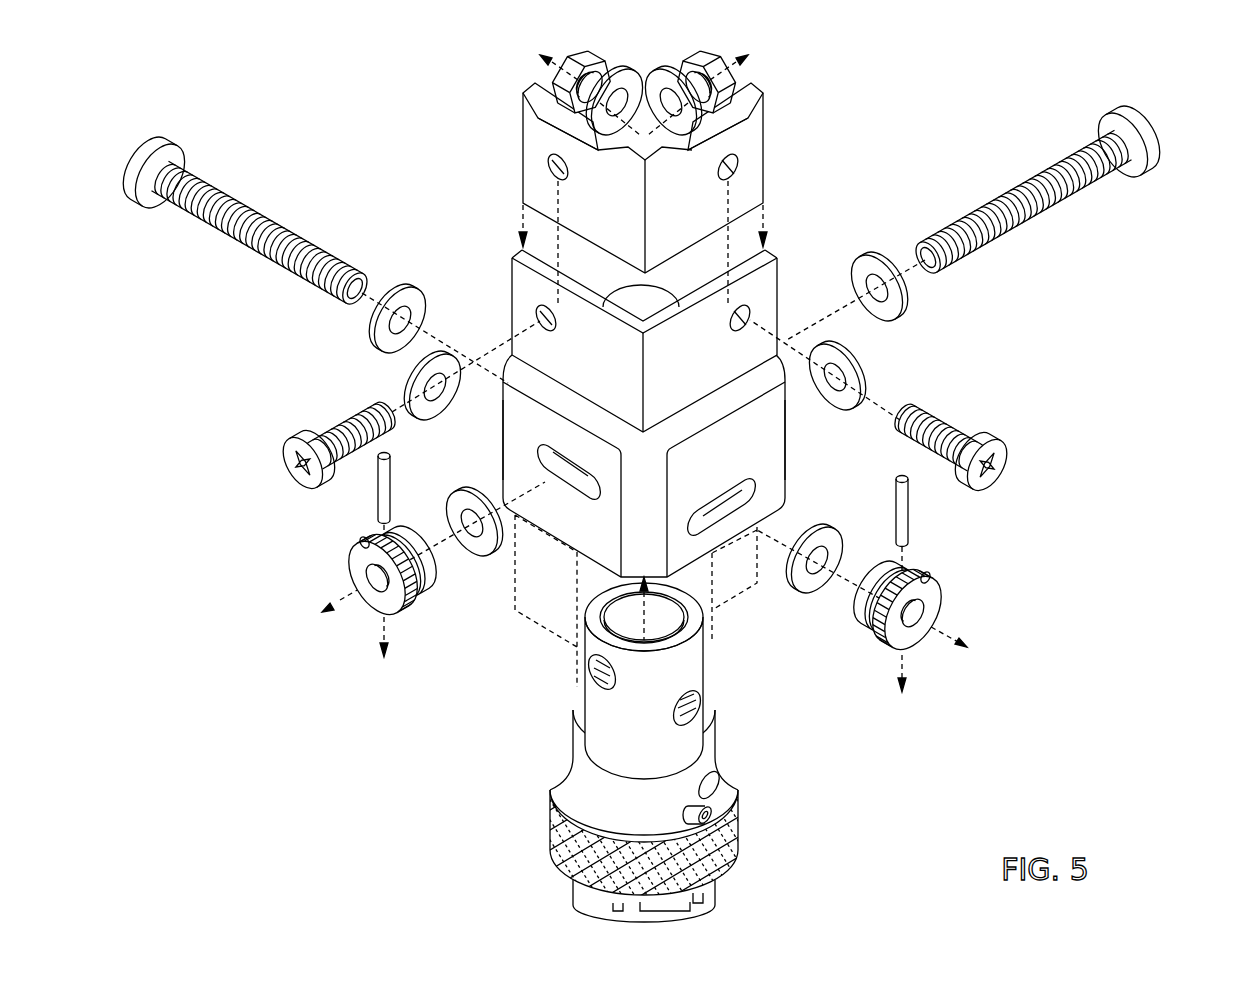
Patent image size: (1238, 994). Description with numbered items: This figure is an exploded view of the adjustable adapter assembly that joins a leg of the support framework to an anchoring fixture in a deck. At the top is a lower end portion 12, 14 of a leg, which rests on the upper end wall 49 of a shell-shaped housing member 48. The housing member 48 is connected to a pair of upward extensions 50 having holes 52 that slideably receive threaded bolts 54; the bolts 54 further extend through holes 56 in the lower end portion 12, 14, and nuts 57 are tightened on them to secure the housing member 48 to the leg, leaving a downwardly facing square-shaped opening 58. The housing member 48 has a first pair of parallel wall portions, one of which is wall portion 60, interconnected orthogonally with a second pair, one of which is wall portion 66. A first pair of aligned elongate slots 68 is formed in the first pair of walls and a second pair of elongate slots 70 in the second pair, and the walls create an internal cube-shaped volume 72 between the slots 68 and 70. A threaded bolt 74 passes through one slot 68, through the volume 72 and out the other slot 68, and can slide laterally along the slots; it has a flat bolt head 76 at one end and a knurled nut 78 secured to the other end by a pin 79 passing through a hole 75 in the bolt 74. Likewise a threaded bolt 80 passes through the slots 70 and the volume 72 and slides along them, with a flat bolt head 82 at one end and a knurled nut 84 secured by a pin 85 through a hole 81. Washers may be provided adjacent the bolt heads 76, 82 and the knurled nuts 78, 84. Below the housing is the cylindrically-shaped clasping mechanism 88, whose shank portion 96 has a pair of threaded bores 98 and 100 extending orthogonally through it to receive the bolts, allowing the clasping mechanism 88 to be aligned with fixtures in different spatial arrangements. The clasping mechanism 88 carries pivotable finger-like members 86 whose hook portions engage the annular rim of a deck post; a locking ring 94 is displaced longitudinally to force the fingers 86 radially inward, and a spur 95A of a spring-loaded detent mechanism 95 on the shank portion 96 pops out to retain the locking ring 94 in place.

The lower end portion 12 is at (643, 178).
The lower end portion 14 is at (572, 212).
The housing member 48 is at (657, 521).
The upper end wall 49 is at (655, 298).
The upward extensions 50 is at (581, 364).
The holes 52 is at (540, 316).
The threaded bolts 54 is at (330, 427).
The holes 56 is at (548, 168).
The nuts 57 is at (556, 72).
The square-shaped opening 58 is at (546, 536).
The wall portion 60 is at (512, 433).
The wall portion 66 is at (746, 433).
The elongate slots 68 is at (581, 491).
The elongate slots 70 is at (717, 520).
The internal cube-shaped volume 72 is at (643, 510).
The threaded bolt 74 is at (1058, 194).
The hole 75 is at (937, 236).
The flat bolt head 76 is at (1058, 194).
The knurled nut 78 is at (368, 543).
The pin 79 is at (378, 505).
The threaded bolt 80 is at (235, 224).
The hole 81 is at (351, 272).
The flat bolt head 82 is at (235, 224).
The knurled nut 84 is at (920, 644).
The pin 85 is at (908, 525).
The pivotable finger-like members 86 is at (614, 719).
The clasping mechanism 88 is at (613, 678).
The locking ring 94 is at (548, 840).
The spring-loaded detent mechanism 95 is at (718, 773).
The spur 95A is at (712, 808).
The shank portion 96 is at (622, 728).
The threaded bore 98 is at (615, 680).
The threaded bore 100 is at (700, 705).